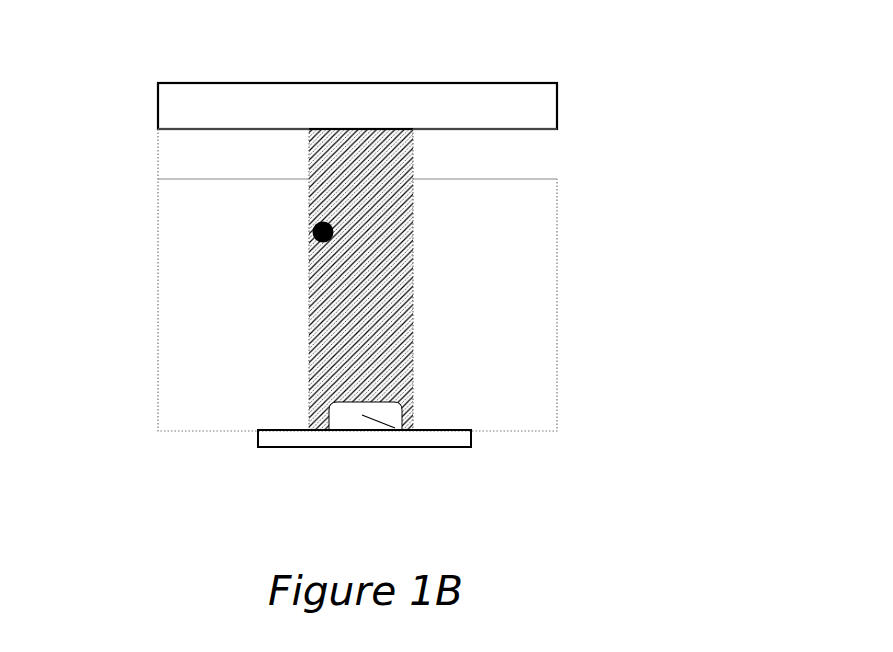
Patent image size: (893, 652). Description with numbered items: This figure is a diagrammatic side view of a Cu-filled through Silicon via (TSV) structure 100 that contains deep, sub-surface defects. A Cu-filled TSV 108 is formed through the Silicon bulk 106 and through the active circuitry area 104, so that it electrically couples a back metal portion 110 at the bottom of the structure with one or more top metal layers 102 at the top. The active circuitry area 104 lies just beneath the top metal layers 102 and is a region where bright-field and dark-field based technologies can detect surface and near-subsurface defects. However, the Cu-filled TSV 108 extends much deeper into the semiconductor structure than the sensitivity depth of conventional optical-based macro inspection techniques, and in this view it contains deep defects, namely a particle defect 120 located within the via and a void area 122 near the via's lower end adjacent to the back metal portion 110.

The Cu-filled through Silicon via (TSV) structure 100 is at (662, 116).
The top metal layers 102 is at (167, 99).
The active circuitry area 104 is at (158, 164).
The Silicon bulk 106 is at (158, 286).
The Cu-filled TSV 108 is at (322, 128).
The back metal portion 110 is at (257, 438).
The particle defect 120 is at (328, 224).
The void area 122 is at (425, 447).